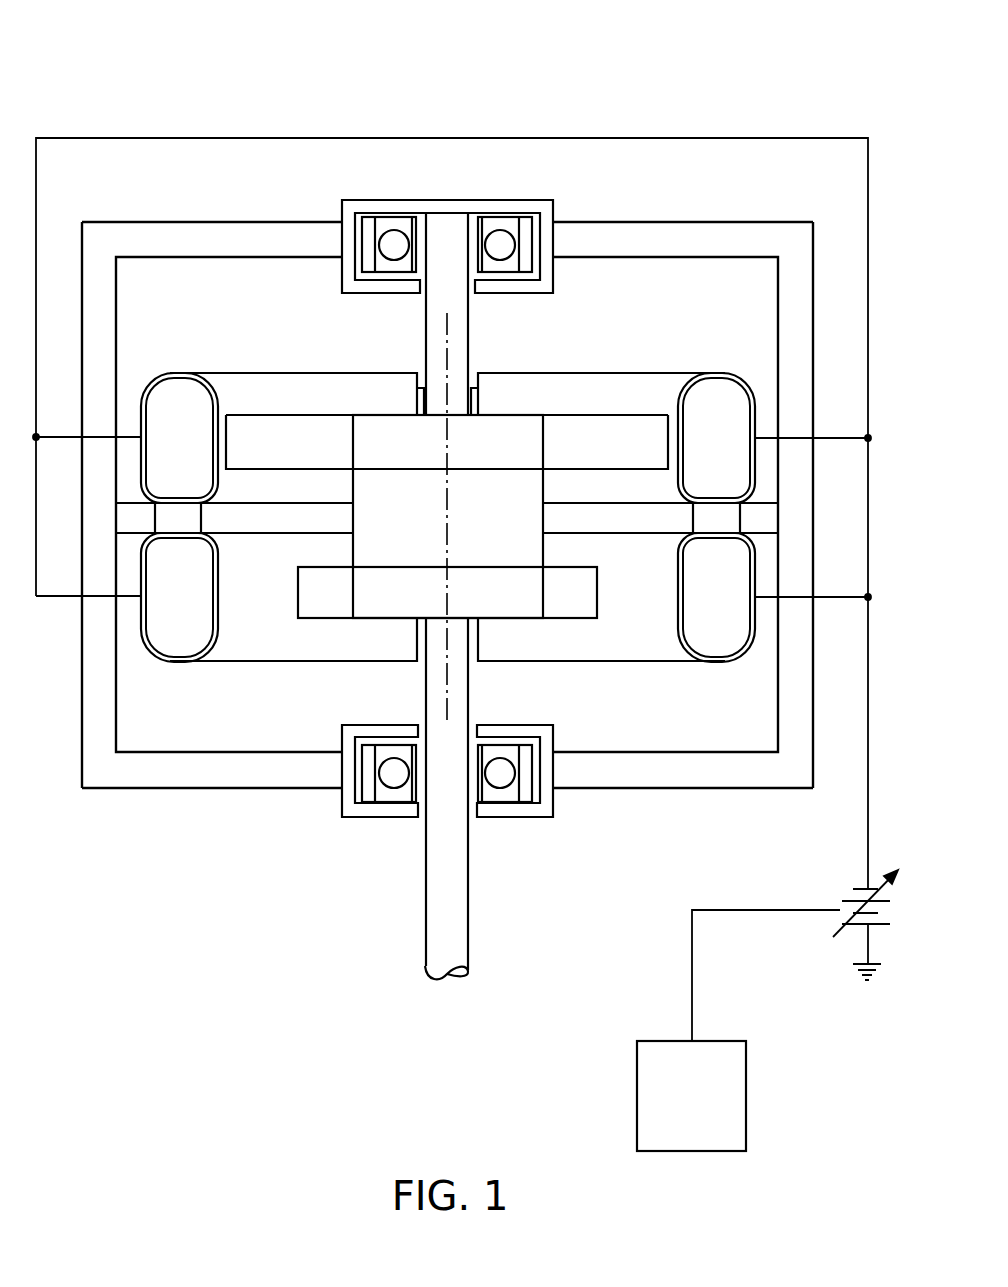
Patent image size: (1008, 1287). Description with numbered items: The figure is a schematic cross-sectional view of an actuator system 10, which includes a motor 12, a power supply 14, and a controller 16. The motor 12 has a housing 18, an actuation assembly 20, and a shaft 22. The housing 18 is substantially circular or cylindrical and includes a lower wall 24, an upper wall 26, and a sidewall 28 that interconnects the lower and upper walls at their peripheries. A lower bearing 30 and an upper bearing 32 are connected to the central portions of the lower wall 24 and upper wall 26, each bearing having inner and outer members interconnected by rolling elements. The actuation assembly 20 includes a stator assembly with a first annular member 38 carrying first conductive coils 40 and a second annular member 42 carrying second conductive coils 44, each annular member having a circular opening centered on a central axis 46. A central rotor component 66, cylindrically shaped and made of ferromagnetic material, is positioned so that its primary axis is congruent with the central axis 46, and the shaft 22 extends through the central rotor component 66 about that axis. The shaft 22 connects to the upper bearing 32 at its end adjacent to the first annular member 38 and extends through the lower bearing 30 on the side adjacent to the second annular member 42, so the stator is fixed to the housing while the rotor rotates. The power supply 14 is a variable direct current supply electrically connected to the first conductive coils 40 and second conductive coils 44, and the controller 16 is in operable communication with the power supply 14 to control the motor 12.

The actuator system 10 is at (113, 80).
The motor 12 is at (203, 217).
The power supply 14 is at (843, 901).
The controller 16 is at (641, 1103).
The housing 18 is at (473, 504).
The actuation assembly 20 is at (301, 349).
The shaft 22 is at (460, 321).
The lower wall 24 is at (206, 788).
The upper wall 26 is at (604, 227).
The sidewall 28 is at (798, 268).
The lower bearing 30 is at (487, 796).
The upper bearing 32 is at (409, 223).
The first annular member 38 is at (163, 457).
The first conductive coils 40 is at (176, 373).
The second annular member 42 is at (163, 612).
The second conductive coils 44 is at (171, 662).
The central axis 46 is at (445, 697).
The central rotor component 66 is at (478, 524).